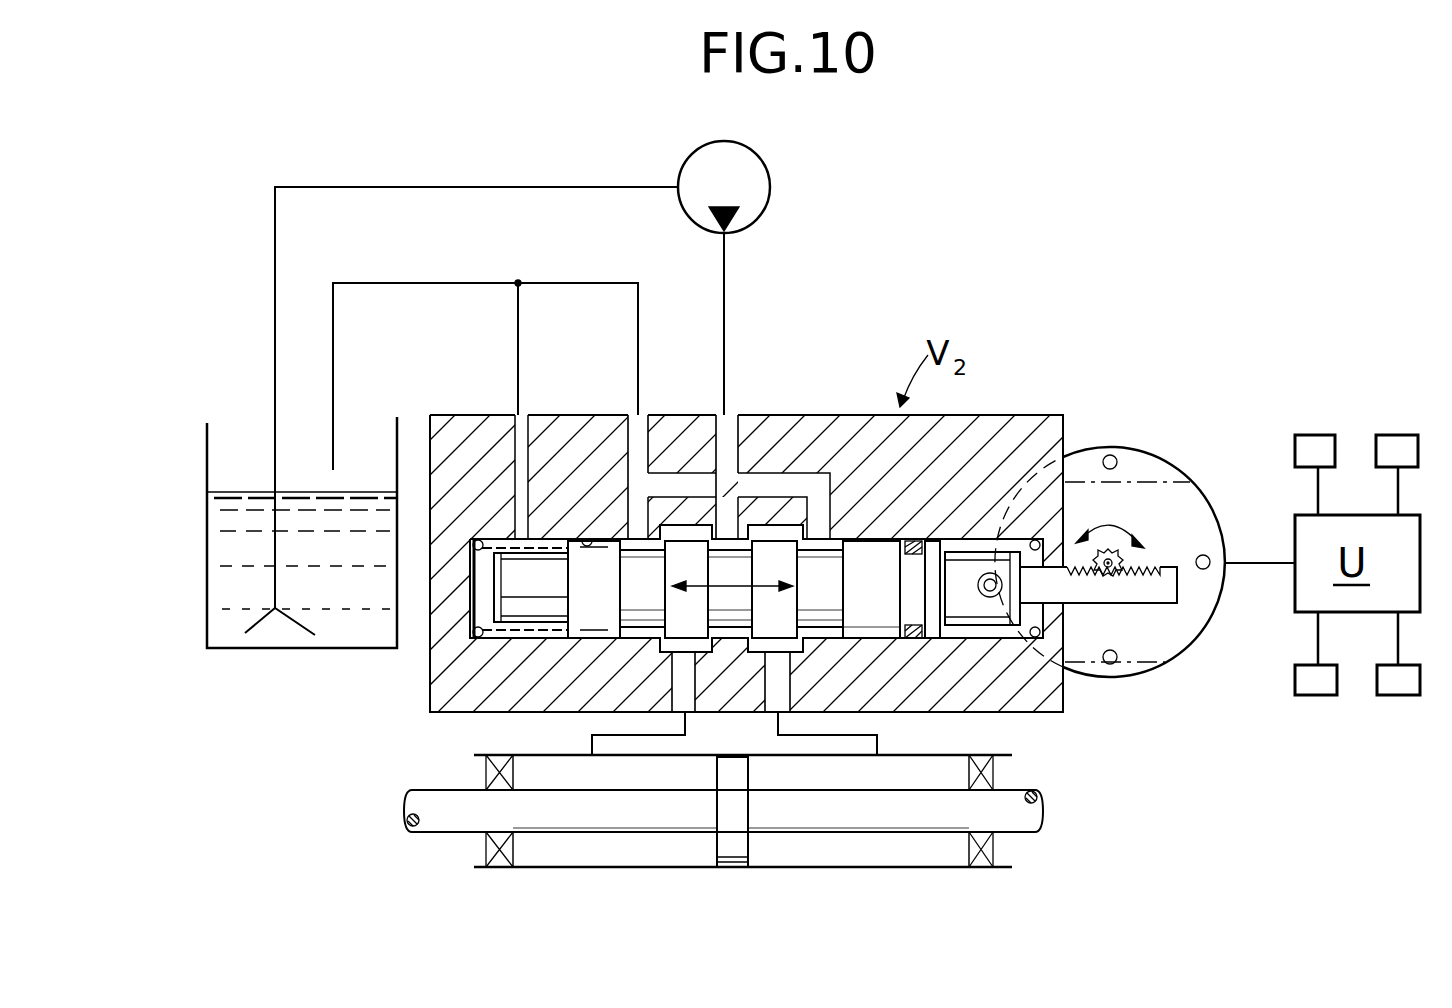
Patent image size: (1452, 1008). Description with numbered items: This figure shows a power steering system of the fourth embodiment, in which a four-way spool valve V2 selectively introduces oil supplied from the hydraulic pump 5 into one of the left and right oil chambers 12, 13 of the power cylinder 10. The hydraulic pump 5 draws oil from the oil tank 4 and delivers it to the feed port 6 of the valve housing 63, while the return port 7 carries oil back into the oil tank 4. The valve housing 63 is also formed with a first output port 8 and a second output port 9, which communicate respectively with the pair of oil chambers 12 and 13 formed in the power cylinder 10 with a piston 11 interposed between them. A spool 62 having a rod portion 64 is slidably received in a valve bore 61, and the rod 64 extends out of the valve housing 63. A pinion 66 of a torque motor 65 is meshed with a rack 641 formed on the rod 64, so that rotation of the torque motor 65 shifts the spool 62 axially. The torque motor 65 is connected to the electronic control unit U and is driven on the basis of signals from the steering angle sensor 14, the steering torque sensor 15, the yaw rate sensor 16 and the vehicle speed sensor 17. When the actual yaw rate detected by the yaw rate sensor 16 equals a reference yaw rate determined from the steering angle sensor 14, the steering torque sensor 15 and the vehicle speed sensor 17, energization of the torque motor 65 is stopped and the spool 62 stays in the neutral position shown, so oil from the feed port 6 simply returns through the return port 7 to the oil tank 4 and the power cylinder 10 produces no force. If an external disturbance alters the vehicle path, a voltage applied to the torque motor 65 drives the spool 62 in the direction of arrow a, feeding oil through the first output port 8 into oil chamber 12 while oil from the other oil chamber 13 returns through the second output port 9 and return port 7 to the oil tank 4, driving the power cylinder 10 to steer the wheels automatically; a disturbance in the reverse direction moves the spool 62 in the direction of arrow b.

The oil tank 4 is at (207, 424).
The hydraulic pump 5 is at (768, 169).
The feed port 6 is at (735, 420).
The return port 7 is at (647, 420).
The first output port 8 is at (770, 685).
The second output port 9 is at (692, 680).
The power cylinder 10 is at (962, 750).
The piston 11 is at (742, 848).
The oil chamber 12 is at (893, 770).
The oil chamber 13 is at (572, 775).
The steering angle sensor 14 is at (1315, 435).
The steering torque sensor 15 is at (1395, 435).
The yaw rate sensor 16 is at (1312, 695).
The vehicle speed sensor 17 is at (1395, 695).
The valve bore 61 is at (587, 541).
The spool 62 is at (857, 586).
The valve housing 63 is at (993, 420).
The rod portion 64 is at (1162, 610).
The rack 641 is at (1147, 567).
The torque motor 65 is at (1150, 467).
The pinion 66 is at (1117, 548).